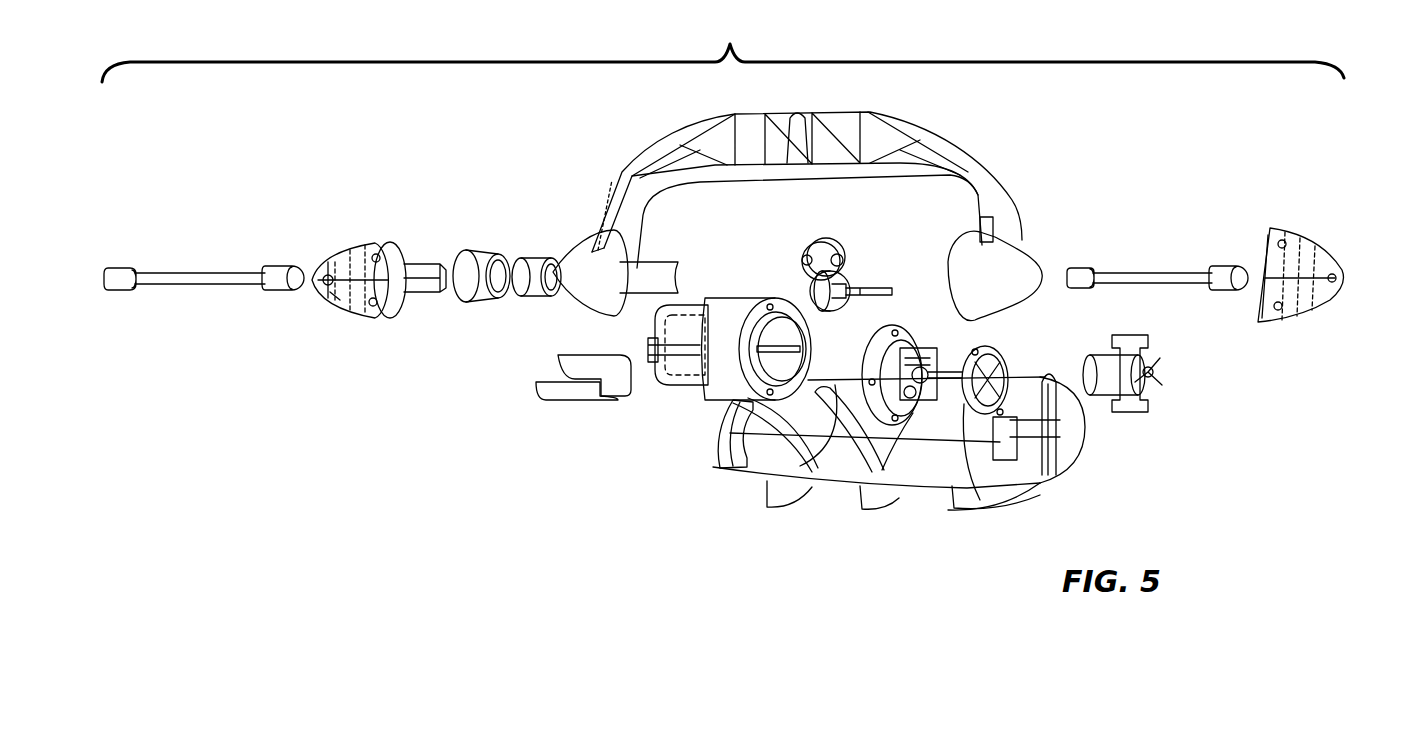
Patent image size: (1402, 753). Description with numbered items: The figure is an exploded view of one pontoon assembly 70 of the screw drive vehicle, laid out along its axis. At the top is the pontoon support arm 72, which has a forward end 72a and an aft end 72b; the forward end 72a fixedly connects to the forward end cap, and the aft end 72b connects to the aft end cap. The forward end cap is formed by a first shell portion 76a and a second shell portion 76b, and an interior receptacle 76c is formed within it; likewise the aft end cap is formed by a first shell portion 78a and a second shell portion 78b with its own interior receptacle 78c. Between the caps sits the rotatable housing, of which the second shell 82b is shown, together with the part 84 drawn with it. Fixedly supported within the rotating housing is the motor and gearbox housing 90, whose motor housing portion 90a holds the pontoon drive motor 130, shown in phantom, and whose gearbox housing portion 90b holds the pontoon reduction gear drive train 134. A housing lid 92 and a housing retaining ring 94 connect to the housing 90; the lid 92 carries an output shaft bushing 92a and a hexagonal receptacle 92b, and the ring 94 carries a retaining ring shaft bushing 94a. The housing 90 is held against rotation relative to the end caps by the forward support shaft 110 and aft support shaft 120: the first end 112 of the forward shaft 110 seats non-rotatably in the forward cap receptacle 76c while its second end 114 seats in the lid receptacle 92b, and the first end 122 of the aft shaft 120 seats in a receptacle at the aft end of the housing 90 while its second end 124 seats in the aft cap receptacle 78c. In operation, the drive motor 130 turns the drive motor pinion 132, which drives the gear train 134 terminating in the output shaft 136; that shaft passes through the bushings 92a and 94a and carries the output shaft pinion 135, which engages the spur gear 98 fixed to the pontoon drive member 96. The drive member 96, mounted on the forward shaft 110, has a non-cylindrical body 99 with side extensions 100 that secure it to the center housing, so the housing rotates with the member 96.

The pontoon assembly 70 is at (723, 43).
The pontoon support arm 72 is at (928, 135).
The support arm forward end 72a is at (1000, 190).
The support arm aft end 72b is at (637, 224).
The first shell portion of forward end cap 76a is at (1012, 294).
The second shell portion of forward end cap 76b is at (1308, 236).
The forward end cap interior receptacle 76c is at (1318, 286).
The first shell portion of aft end cap 78a is at (592, 252).
The second shell portion of aft end cap 78b is at (365, 252).
The aft end cap interior receptacle 78c is at (337, 298).
The housing second shell 82b is at (742, 476).
The frame fin 84 is at (770, 508).
The motor and gearbox housing 90 is at (743, 360).
The motor housing portion 90a is at (682, 305).
The gearbox housing portion 90b is at (722, 396).
The housing lid 92 is at (863, 330).
The output shaft bushing 92a is at (868, 508).
The housing lid receptacle 92b is at (916, 362).
The housing retaining ring 94 is at (1012, 370).
The retaining ring shaft bushing 94a is at (962, 510).
The pontoon drive member 96 is at (1157, 364).
The spur gear 98 is at (1115, 354).
The non-cylindrical body 99 is at (1090, 398).
The side extensions 100 is at (1140, 334).
The forward support shaft 110 is at (1147, 268).
The first end of forward support shaft 112 is at (1228, 266).
The second end of forward support shaft 114 is at (1082, 268).
The aft support shaft 120 is at (215, 285).
The first end of aft support shaft 122 is at (290, 293).
The second end of aft support shaft 124 is at (118, 268).
The pontoon drive motor 130 is at (680, 382).
The drive motor pinion 132 is at (802, 240).
The pontoon reduction gear drive train 134 is at (832, 212).
The output shaft pinion 135 is at (825, 292).
The output shaft 136 is at (913, 268).